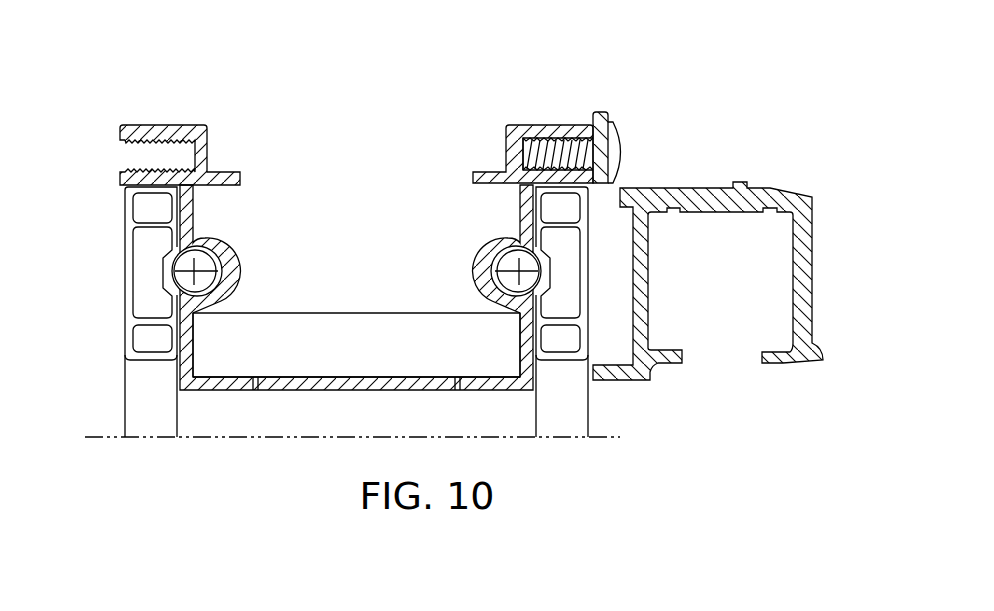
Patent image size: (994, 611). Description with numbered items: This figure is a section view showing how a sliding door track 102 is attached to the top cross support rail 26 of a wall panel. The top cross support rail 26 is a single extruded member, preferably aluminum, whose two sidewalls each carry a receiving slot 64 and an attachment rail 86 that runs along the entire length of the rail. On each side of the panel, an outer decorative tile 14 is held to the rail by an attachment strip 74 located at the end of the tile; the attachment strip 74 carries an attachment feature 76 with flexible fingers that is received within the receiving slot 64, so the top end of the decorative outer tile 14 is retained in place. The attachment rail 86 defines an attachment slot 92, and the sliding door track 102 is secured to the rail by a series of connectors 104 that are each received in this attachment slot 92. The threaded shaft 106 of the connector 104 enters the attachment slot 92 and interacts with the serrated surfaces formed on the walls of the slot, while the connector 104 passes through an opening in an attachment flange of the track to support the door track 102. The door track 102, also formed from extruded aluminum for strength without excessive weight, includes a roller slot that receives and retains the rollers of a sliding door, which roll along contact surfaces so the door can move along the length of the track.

The decorative outer tile 14 is at (140, 394).
The top cross support rail 26 is at (233, 404).
The receiving slot 64 is at (224, 271).
The attachment strip 74 is at (150, 275).
The attachment feature 76 is at (196, 270).
The attachment rail 86 is at (356, 123).
The attachment slot 92 is at (528, 158).
The sliding door track 102 is at (704, 160).
The connector 104 is at (622, 154).
The threaded shaft 106 is at (574, 153).